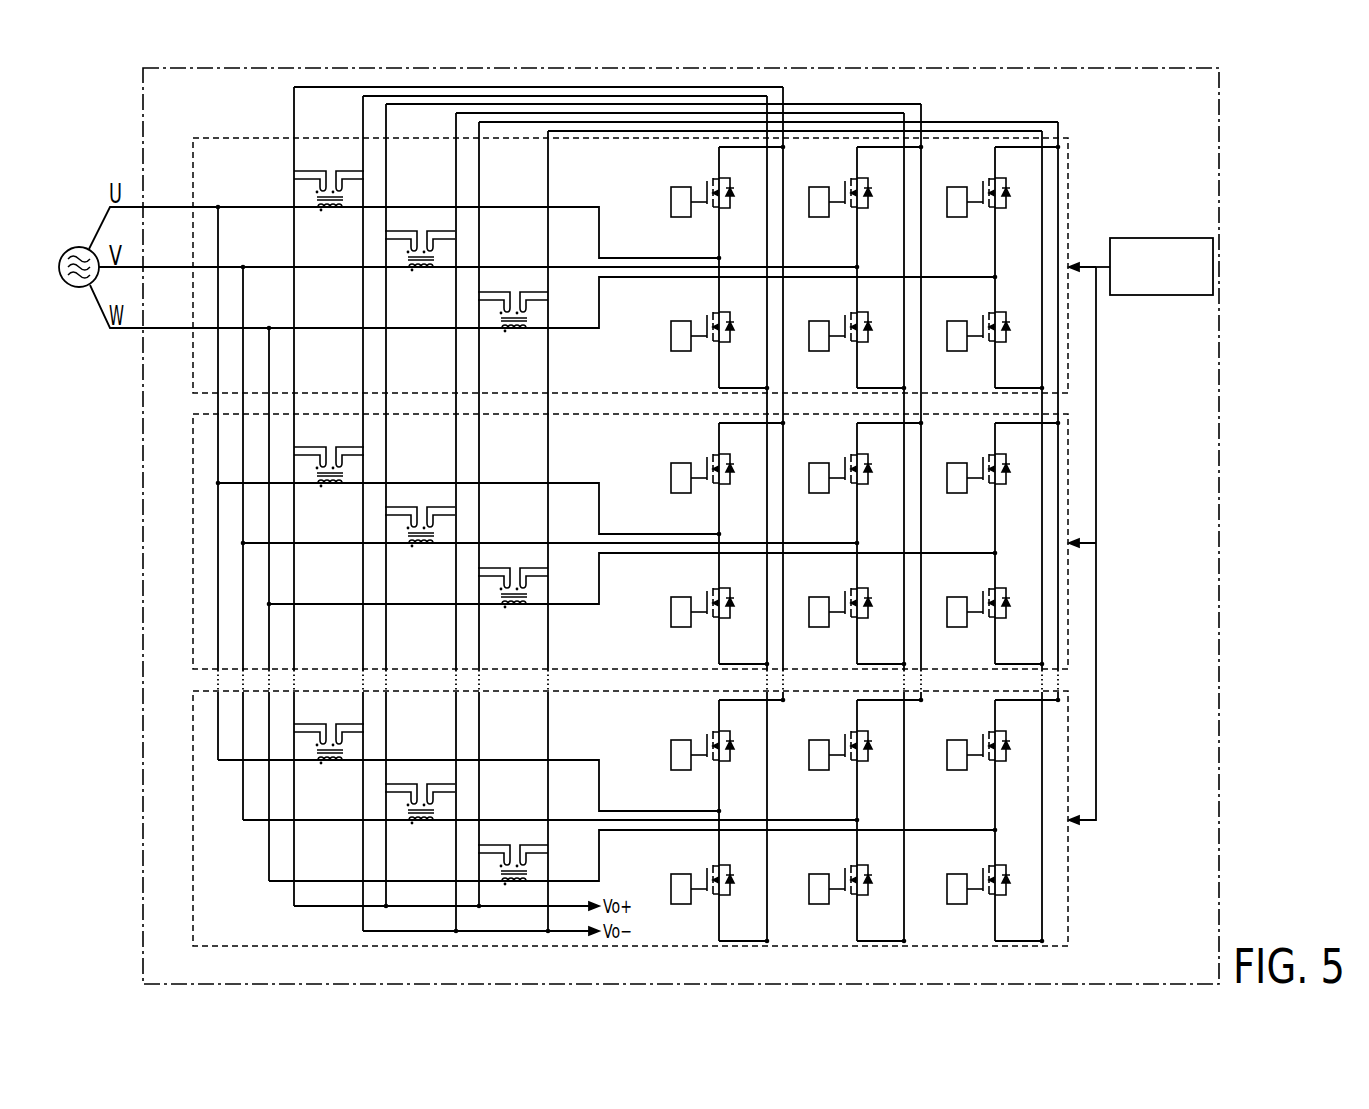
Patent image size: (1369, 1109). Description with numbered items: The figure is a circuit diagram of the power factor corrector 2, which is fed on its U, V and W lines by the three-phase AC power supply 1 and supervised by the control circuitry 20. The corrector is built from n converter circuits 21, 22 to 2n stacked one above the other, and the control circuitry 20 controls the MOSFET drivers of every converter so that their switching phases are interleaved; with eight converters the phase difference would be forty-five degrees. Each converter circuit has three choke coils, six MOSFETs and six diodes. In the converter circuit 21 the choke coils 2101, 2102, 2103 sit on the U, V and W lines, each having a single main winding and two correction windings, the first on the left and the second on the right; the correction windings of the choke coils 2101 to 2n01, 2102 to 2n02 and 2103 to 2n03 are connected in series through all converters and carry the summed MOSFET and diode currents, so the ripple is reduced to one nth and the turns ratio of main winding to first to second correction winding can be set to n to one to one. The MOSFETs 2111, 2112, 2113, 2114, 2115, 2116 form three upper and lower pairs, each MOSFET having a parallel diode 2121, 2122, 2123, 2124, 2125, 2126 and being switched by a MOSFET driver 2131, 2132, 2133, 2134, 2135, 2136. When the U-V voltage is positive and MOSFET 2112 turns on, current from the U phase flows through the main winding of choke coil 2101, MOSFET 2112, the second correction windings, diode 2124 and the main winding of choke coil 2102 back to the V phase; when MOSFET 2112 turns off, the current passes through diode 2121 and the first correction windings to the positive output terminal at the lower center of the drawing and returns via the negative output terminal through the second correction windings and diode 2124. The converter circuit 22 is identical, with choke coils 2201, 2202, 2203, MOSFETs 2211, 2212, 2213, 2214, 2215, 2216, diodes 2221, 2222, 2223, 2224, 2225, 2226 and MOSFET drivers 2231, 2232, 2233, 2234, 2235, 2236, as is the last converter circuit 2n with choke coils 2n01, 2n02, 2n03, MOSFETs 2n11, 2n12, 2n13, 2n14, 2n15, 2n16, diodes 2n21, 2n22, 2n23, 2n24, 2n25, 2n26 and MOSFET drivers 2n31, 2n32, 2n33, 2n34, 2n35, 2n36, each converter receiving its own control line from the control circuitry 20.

The three-phase AC power supply 1 is at (82, 247).
The power factor corrector 2 is at (143, 116).
The control circuitry 20 is at (1161, 237).
The converter circuit 21 is at (193, 371).
The converter circuit 22 is at (193, 533).
The converter circuit 2n is at (193, 817).
The choke coil 2101 is at (335, 213).
The choke coil 2102 is at (426, 273).
The choke coil 2103 is at (519, 334).
The choke coil 2201 is at (335, 489).
The choke coil 2202 is at (426, 549).
The choke coil 2203 is at (519, 610).
The choke coil 2n01 is at (335, 766).
The choke coil 2n02 is at (426, 826).
The choke coil 2n03 is at (516, 886).
The MOSFET 2111 is at (689, 175).
The MOSFET 2112 is at (689, 309).
The MOSFET 2113 is at (827, 175).
The MOSFET 2114 is at (827, 309).
The MOSFET 2115 is at (965, 175).
The MOSFET 2116 is at (965, 309).
The diode 2121 is at (740, 218).
The diode 2122 is at (740, 352).
The diode 2123 is at (878, 218).
The diode 2124 is at (878, 352).
The diode 2125 is at (1016, 218).
The diode 2126 is at (1016, 352).
The MOSFET driver 2131 is at (681, 222).
The MOSFET driver 2132 is at (681, 356).
The MOSFET driver 2133 is at (819, 222).
The MOSFET driver 2134 is at (819, 356).
The MOSFET driver 2135 is at (957, 222).
The MOSFET driver 2136 is at (957, 356).
The MOSFET 2211 is at (689, 451).
The MOSFET 2212 is at (689, 585).
The MOSFET 2213 is at (827, 451).
The MOSFET 2214 is at (827, 585).
The MOSFET 2215 is at (965, 451).
The MOSFET 2216 is at (965, 585).
The diode 2221 is at (740, 494).
The diode 2222 is at (740, 628).
The diode 2223 is at (878, 494).
The diode 2224 is at (878, 628).
The diode 2225 is at (1016, 494).
The diode 2226 is at (1016, 628).
The MOSFET driver 2231 is at (681, 498).
The MOSFET driver 2232 is at (681, 632).
The MOSFET driver 2233 is at (819, 498).
The MOSFET driver 2234 is at (819, 632).
The MOSFET driver 2235 is at (957, 498).
The MOSFET driver 2236 is at (957, 632).
The MOSFET 2n11 is at (689, 728).
The MOSFET 2n12 is at (689, 862).
The MOSFET 2n13 is at (827, 728).
The MOSFET 2n14 is at (827, 862).
The MOSFET 2n15 is at (965, 728).
The MOSFET 2n16 is at (965, 862).
The diode 2n21 is at (740, 771).
The diode 2n22 is at (740, 905).
The diode 2n23 is at (878, 771).
The diode 2n24 is at (878, 905).
The diode 2n25 is at (1016, 771).
The diode 2n26 is at (1016, 905).
The MOSFET driver 2n31 is at (681, 775).
The MOSFET driver 2n32 is at (681, 909).
The MOSFET driver 2n33 is at (819, 775).
The MOSFET driver 2n34 is at (819, 909).
The MOSFET driver 2n35 is at (957, 775).
The MOSFET driver 2n36 is at (957, 909).